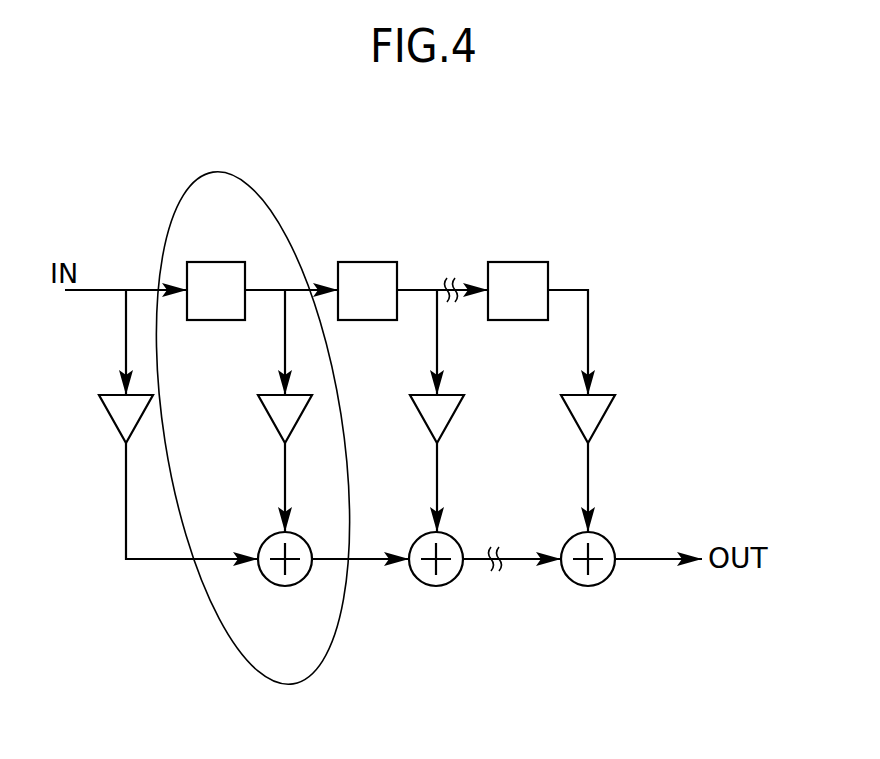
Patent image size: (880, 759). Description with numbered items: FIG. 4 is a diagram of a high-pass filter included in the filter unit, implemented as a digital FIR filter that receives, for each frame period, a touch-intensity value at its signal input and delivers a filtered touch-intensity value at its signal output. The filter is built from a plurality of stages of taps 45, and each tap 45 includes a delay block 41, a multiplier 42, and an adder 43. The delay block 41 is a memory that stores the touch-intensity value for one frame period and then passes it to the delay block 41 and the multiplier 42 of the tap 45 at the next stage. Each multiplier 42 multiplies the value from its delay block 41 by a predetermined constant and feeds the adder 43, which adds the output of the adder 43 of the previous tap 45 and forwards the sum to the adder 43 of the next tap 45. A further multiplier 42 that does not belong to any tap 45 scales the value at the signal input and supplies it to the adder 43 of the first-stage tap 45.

The delay block 41 is at (219, 262).
The multiplier 42 is at (114, 423).
The adder 43 is at (285, 587).
The tap 45 is at (218, 172).